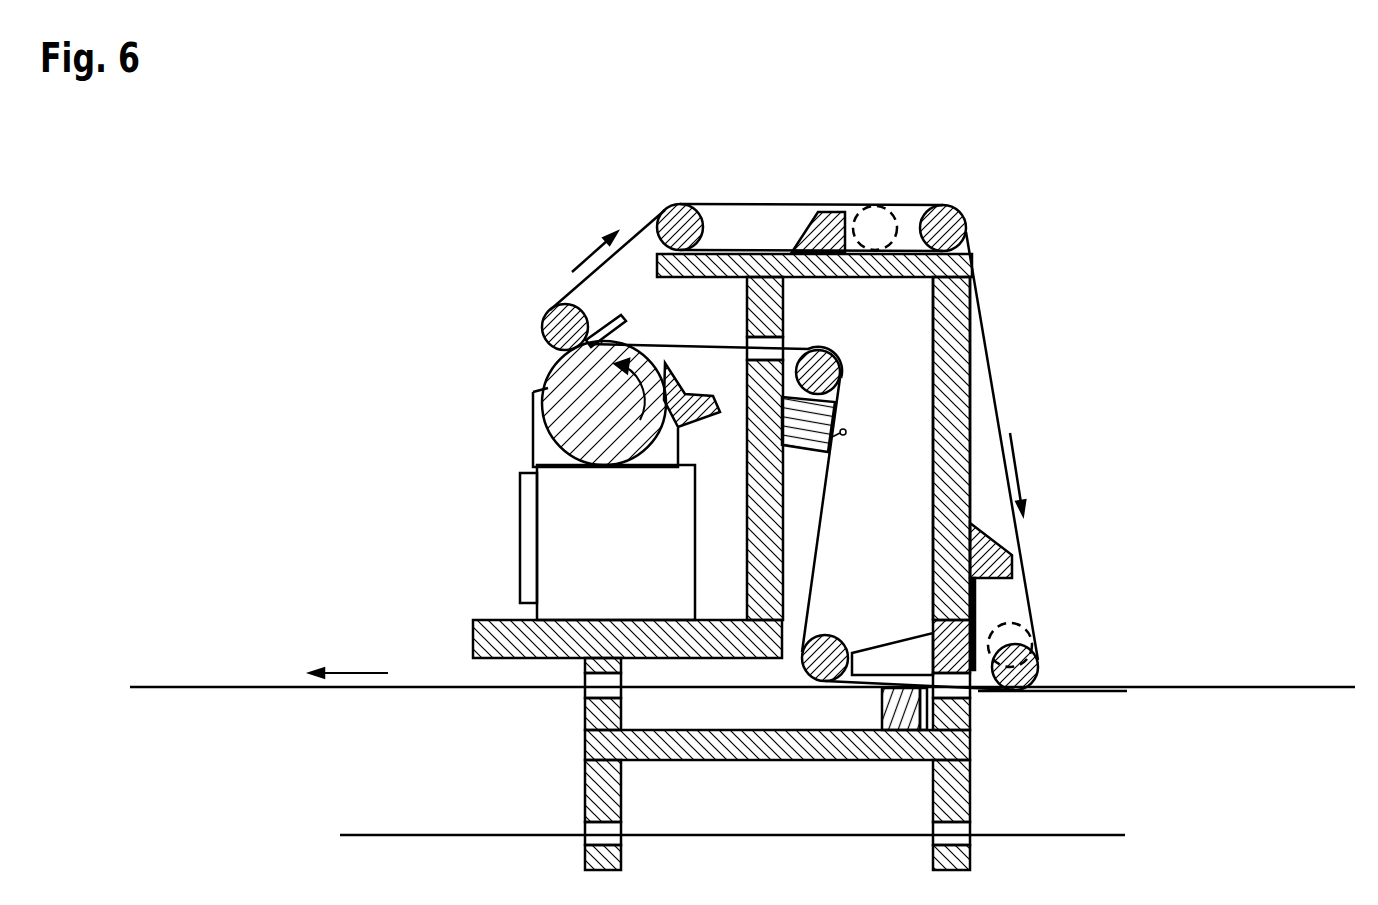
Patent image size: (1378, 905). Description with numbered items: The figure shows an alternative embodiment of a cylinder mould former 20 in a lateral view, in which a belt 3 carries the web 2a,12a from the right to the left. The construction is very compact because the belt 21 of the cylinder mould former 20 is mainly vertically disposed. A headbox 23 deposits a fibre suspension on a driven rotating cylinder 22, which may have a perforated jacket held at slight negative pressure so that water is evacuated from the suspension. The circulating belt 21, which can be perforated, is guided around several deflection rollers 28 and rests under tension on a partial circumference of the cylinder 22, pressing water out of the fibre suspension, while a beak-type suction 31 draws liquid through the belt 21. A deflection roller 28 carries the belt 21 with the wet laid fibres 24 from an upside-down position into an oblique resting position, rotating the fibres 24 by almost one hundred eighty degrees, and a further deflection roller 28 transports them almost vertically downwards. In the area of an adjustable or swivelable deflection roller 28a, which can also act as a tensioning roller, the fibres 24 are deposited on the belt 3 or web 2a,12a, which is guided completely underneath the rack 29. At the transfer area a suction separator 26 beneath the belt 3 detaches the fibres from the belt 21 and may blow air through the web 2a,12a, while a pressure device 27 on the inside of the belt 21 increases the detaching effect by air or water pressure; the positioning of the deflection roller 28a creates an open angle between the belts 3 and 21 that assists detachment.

The cylinder mould former 20 is at (1130, 339).
The belt 21 is at (792, 202).
The cylinder 22 is at (572, 412).
The headbox 23 is at (678, 400).
The wet laid fibres 24 is at (568, 288).
The suction separator 26 is at (897, 712).
The pressure device 27 is at (902, 650).
The deflection roller 28 is at (947, 217).
The deflection roller 28a is at (1038, 655).
The rack 29 is at (962, 355).
The suction 31 is at (622, 338).
The belt 3 is at (353, 688).
The web 2a,12a is at (1223, 688).